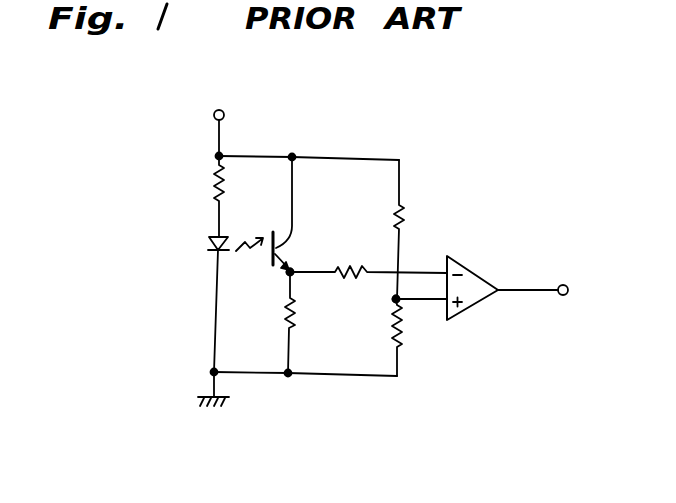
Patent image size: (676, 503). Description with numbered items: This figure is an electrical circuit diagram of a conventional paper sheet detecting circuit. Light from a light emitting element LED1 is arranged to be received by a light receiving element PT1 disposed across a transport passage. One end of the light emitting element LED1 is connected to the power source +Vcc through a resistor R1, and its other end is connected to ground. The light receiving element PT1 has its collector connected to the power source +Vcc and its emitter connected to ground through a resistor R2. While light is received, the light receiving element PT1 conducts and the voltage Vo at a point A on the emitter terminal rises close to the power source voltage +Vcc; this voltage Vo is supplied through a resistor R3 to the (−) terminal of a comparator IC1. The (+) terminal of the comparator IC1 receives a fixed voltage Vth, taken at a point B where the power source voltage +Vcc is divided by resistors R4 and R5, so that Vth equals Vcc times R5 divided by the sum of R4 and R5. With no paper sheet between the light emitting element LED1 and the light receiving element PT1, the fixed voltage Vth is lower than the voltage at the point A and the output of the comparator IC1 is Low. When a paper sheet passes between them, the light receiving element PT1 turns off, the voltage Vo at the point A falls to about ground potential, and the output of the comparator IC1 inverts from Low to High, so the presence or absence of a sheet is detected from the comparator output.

The power source Vcc is at (223, 116).
The resistor R1 is at (215, 186).
The light emitting element LED1 is at (208, 249).
The light receiving element PT1 is at (293, 240).
The voltage Vo is at (292, 270).
The point A is at (287, 276).
The resistor R2 is at (296, 312).
The resistor R3 is at (353, 266).
The resistor R4 is at (403, 216).
The point B is at (398, 300).
The fixed voltage Vth is at (395, 303).
The resistor R5 is at (402, 320).
The comparator IC1 is at (478, 299).